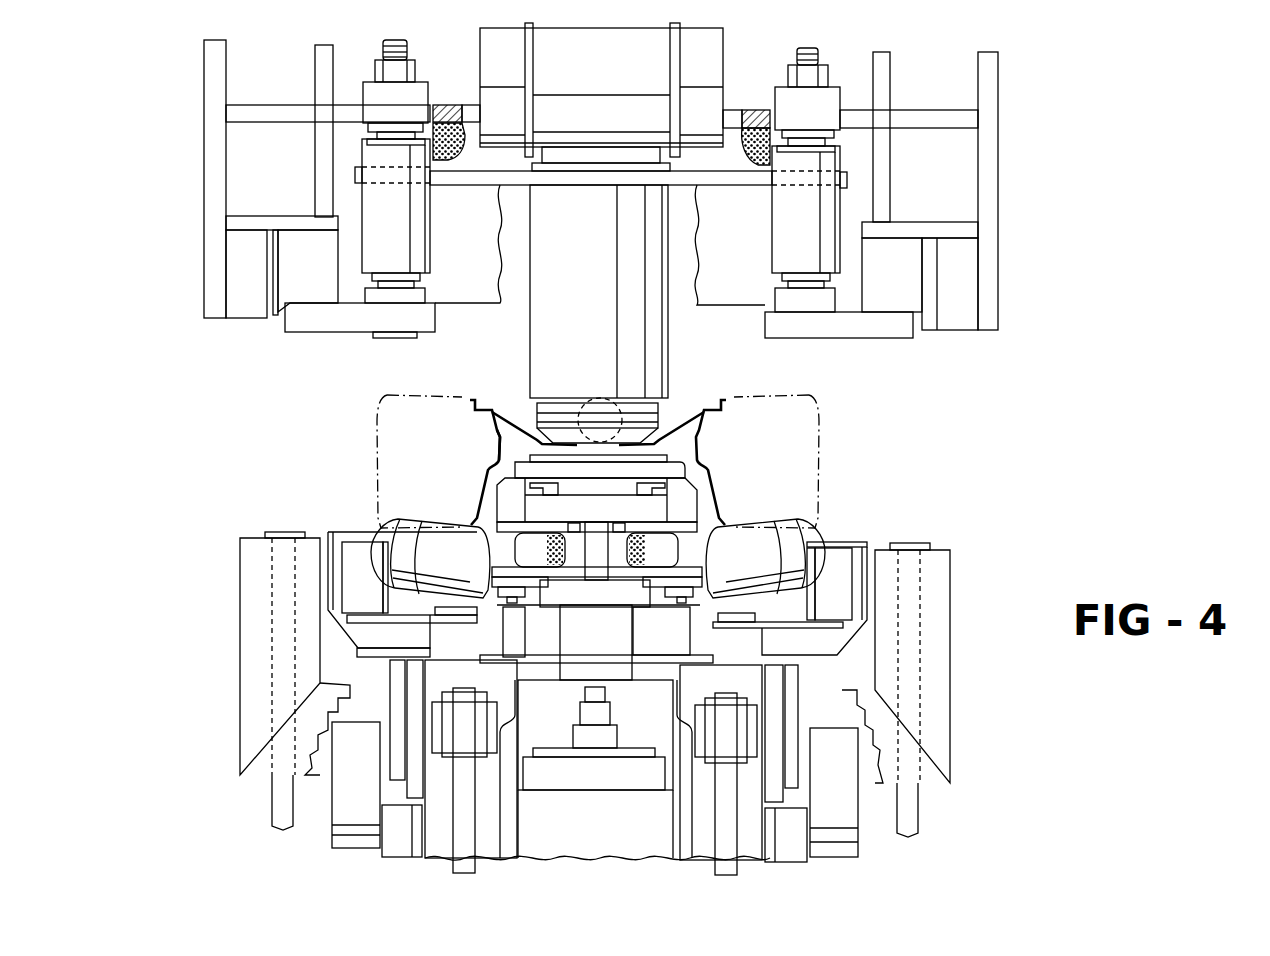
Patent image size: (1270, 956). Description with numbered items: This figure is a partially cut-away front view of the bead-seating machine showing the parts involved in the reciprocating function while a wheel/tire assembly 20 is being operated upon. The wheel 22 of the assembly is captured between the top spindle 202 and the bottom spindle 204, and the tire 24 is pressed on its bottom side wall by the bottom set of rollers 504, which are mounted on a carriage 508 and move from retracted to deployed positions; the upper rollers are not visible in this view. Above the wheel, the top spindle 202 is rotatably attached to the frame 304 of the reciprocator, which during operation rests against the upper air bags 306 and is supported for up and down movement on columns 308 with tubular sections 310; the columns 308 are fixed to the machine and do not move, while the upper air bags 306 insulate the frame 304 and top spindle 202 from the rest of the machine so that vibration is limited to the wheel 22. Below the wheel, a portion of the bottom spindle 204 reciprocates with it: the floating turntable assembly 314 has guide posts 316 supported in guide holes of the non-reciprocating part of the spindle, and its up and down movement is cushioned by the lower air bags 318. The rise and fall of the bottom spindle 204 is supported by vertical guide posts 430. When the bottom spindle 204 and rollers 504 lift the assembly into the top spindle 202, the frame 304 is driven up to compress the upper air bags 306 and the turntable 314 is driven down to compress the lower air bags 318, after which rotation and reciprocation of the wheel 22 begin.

The wheel/tire assembly 20 is at (818, 445).
The wheel 22 is at (693, 407).
The tire 24 is at (380, 488).
The top spindle 202 is at (524, 408).
The bottom spindle 204 is at (692, 497).
The frame 304 is at (747, 186).
The upper air bags 306 is at (463, 130).
The columns 308 is at (363, 284).
The tubular sections 310 is at (786, 240).
The floating turntable assembly 314 is at (498, 466).
The guide posts 316 is at (520, 603).
The lower air bags 318 is at (553, 565).
The vertical guide posts 430 is at (457, 815).
The bottom set of rollers 504 is at (760, 571).
The carriage 508 is at (347, 575).